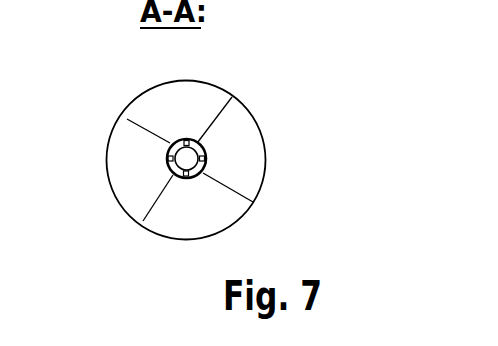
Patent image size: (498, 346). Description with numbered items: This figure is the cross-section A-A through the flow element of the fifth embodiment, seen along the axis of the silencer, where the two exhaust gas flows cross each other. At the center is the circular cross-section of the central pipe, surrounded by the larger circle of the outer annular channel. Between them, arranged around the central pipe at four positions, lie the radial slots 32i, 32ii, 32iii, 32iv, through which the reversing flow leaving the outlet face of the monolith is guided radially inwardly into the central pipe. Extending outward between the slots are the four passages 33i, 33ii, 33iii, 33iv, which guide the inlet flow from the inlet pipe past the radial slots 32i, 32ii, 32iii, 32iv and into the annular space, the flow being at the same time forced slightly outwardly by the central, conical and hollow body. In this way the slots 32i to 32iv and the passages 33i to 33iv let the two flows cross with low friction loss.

The radial slot 32i is at (188, 140).
The radial slot 32ii is at (206, 162).
The radial slot 32iii is at (186, 178).
The radial slot 32iv is at (167, 157).
The passage 33i is at (232, 97).
The passage 33ii is at (253, 202).
The passage 33iii is at (143, 221).
The passage 33iv is at (127, 119).